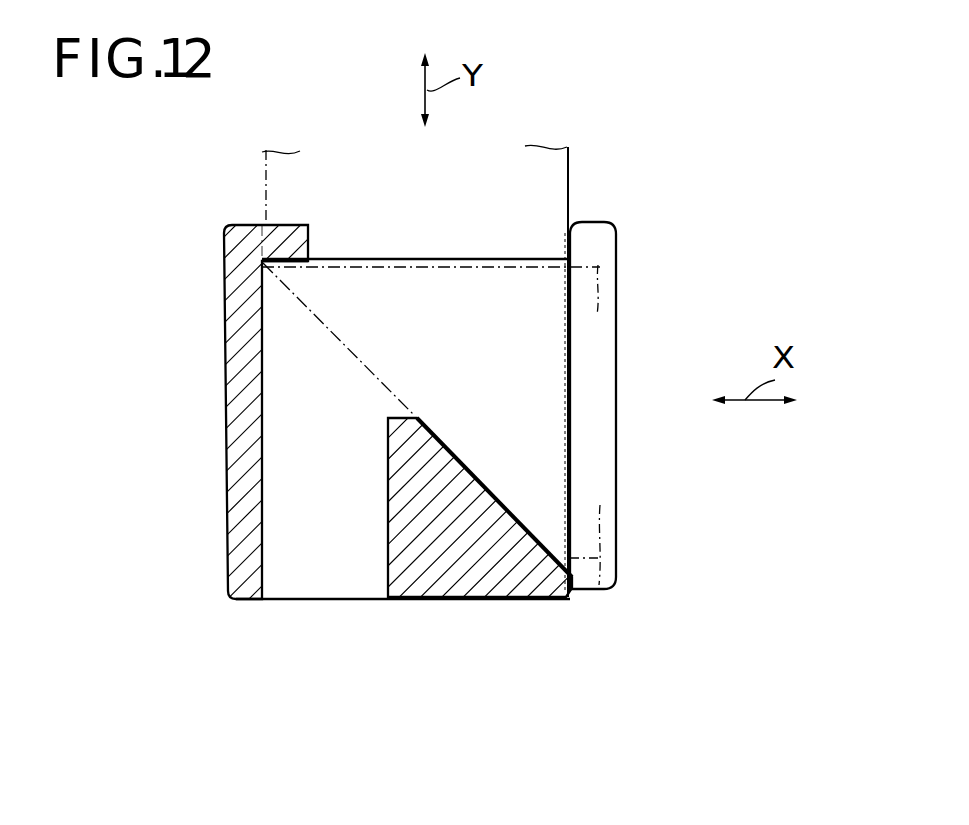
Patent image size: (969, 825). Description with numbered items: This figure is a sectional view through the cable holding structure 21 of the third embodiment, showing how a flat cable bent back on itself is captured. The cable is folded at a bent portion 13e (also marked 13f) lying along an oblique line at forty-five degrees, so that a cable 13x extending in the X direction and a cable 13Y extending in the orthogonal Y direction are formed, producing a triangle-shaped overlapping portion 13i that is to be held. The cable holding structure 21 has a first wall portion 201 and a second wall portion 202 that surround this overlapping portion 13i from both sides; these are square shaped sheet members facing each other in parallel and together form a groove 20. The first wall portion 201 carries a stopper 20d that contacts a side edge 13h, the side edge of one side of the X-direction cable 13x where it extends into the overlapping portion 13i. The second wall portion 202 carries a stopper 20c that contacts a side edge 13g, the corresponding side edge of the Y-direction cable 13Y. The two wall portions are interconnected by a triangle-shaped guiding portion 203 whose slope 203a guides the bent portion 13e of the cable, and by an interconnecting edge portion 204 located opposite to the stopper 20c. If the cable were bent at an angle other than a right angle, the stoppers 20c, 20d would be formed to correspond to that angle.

The groove 20 is at (438, 412).
The first wall portion 201 is at (288, 221).
The second wall portion 202 is at (620, 305).
The guiding portion 203 is at (510, 463).
The slope 203a is at (554, 528).
The interconnecting edge portion 204 is at (236, 474).
The stopper 20c is at (570, 372).
The stopper 20d is at (318, 266).
The cable holding structure 21 is at (670, 221).
The cable extending in Y direction 13Y is at (572, 167).
The side edge 13g is at (568, 208).
The side edge 13h is at (428, 258).
The cable extending in X direction 13x is at (498, 254).
The bent portion 13e is at (256, 340).
The bent portion 13f is at (368, 372).
The overlapping portion 13i is at (535, 446).